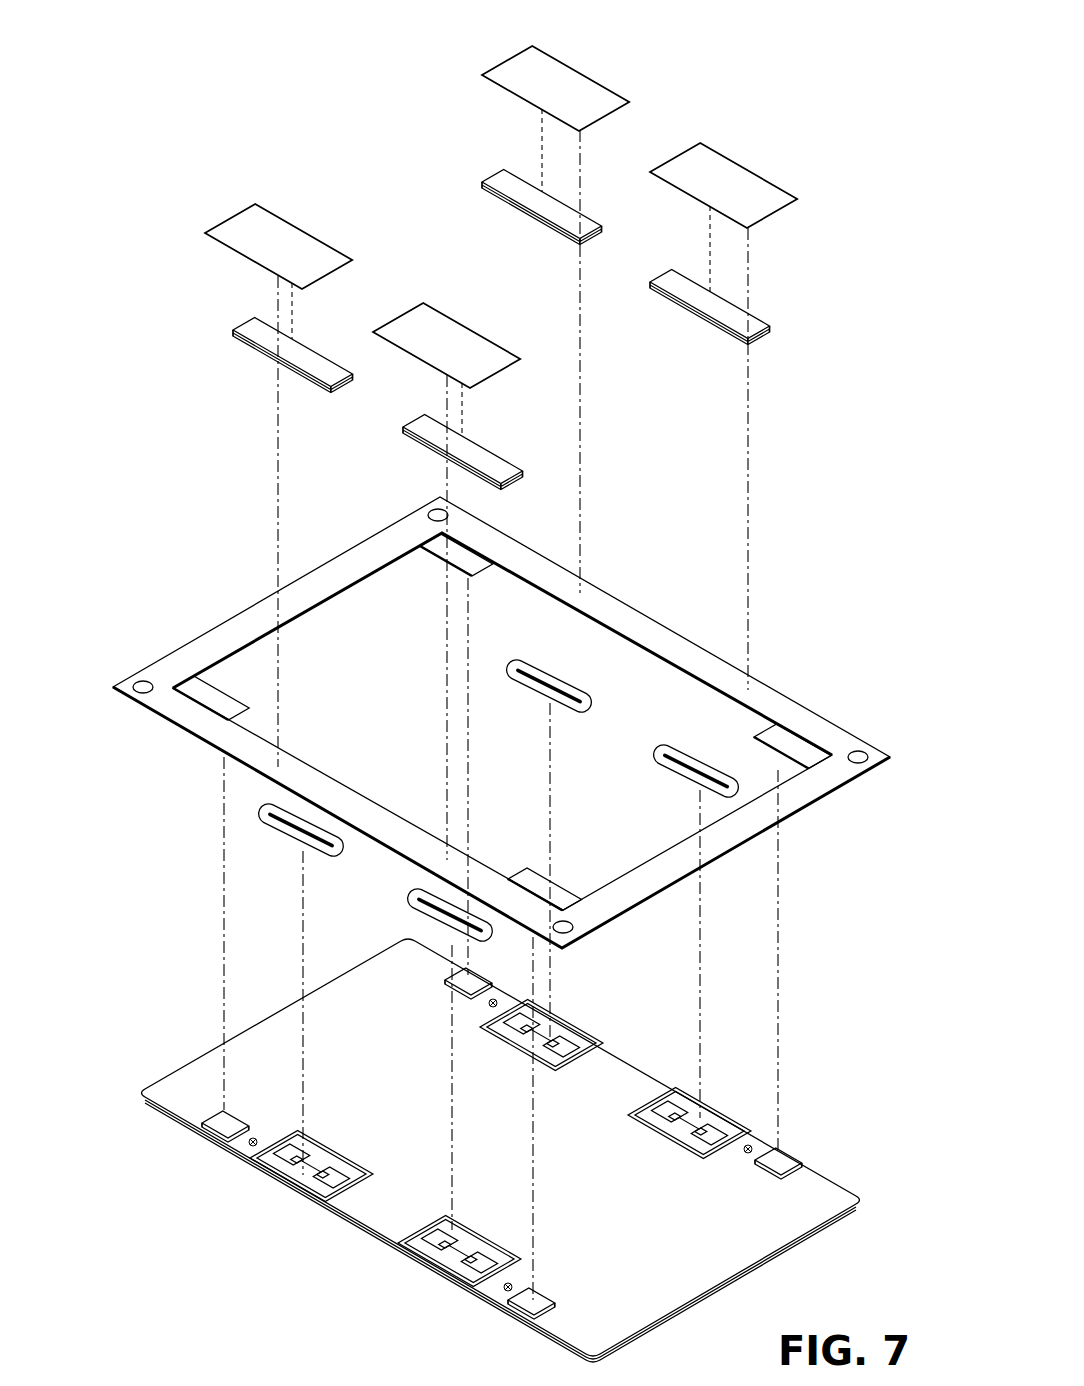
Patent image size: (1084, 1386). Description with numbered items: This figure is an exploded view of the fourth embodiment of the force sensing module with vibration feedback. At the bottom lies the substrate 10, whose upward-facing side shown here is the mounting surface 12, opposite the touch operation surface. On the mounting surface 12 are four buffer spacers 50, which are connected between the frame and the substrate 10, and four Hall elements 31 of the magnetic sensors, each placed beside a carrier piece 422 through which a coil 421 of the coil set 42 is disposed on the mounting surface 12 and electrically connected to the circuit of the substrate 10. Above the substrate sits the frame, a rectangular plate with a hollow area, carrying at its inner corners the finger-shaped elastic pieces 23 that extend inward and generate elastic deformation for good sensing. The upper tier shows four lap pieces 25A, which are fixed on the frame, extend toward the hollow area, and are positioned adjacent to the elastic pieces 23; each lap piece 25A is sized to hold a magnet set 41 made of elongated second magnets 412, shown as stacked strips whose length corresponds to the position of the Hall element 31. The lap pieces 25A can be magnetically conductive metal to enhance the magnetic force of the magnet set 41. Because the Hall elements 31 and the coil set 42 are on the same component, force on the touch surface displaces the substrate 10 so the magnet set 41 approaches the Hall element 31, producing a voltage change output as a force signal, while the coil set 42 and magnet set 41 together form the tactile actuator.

The substrate 10 is at (518, 1150).
The mounting surface 12 is at (373, 1218).
The elastic piece 23 is at (464, 560).
The lap piece 25A is at (562, 90).
The Hall element 31 is at (750, 1143).
The magnet set 41 is at (500, 330).
The second magnet 412 is at (245, 323).
The coil set 42 is at (509, 973).
The coil 421 is at (295, 835).
The carrier piece 422 is at (292, 1140).
The buffer spacer 50 is at (217, 1123).